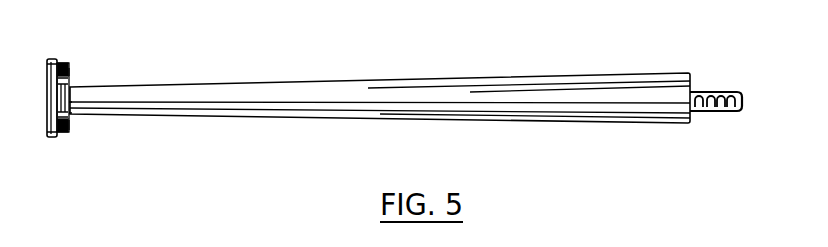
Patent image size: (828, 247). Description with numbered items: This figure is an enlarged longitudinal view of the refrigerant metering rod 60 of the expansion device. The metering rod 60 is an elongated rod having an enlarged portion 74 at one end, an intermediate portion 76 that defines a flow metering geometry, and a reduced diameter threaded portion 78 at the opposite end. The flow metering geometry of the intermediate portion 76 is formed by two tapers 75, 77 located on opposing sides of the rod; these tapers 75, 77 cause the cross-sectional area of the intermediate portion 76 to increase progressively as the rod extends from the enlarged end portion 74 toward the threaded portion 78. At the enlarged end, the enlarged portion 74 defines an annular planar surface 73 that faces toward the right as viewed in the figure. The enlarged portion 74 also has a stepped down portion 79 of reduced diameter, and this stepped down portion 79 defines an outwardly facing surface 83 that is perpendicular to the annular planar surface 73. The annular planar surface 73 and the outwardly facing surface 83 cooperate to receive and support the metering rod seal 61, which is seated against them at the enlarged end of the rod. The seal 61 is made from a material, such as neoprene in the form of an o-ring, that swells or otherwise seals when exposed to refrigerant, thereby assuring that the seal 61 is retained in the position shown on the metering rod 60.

The refrigerant metering rod 60 is at (338, 60).
The metering rod seal 61 is at (65, 63).
The annular planar surface 73 is at (66, 132).
The enlarged portion 74 is at (53, 60).
The taper 75 is at (230, 84).
The intermediate portion 76 is at (408, 103).
The taper 77 is at (240, 118).
The threaded portion 78 is at (722, 112).
The stepped down portion 79 is at (72, 107).
The outwardly facing surface 83 is at (70, 70).